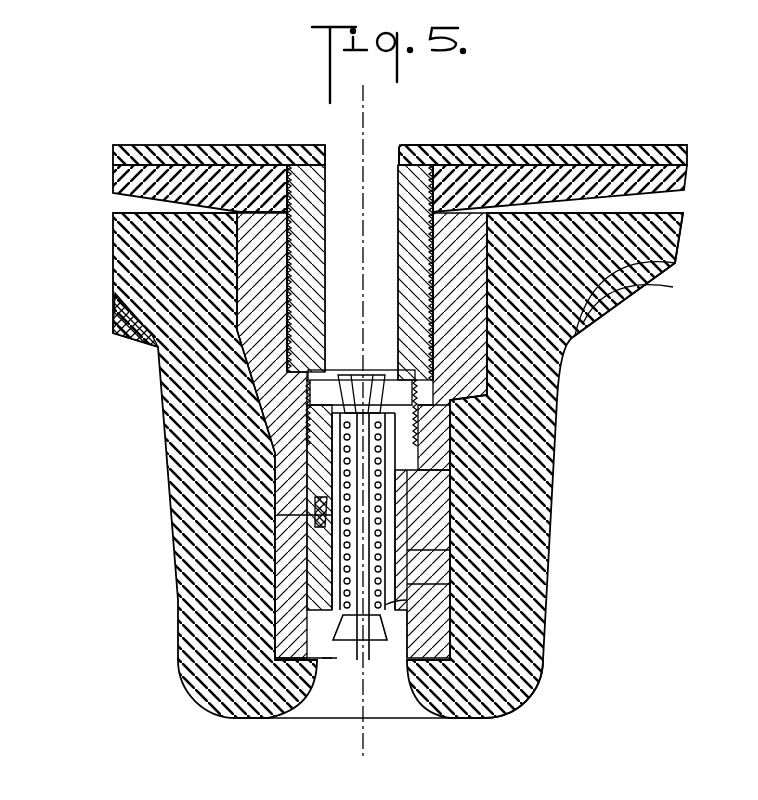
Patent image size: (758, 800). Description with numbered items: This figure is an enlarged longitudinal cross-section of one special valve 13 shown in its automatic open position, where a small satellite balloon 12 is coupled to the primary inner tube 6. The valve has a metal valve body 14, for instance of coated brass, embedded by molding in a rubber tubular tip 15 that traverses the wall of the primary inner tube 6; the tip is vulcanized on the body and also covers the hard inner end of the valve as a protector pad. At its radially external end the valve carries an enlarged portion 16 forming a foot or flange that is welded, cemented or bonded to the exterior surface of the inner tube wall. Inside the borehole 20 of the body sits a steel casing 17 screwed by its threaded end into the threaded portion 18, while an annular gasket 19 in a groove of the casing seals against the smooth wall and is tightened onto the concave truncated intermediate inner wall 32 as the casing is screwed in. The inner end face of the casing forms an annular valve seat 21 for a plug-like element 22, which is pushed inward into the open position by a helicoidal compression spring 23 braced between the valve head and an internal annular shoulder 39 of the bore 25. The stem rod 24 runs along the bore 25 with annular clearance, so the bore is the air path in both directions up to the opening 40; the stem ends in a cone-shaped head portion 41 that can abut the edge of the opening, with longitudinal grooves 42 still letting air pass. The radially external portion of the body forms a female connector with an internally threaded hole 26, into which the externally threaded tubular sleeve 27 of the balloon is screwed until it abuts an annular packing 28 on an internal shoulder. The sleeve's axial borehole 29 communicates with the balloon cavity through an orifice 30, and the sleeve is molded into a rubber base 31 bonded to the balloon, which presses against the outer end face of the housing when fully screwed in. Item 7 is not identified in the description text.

The primary inner tube 6 is at (646, 303).
The nozzle assembly 7 is at (549, 143).
The small satellite balloon 12 is at (189, 145).
The special valve 13 is at (530, 699).
The valve body 14 is at (437, 585).
The tubular tip 15 is at (556, 468).
The enlarged portion 16 is at (676, 233).
The casing 17 is at (412, 550).
The threaded portion 18 is at (445, 442).
The annular gasket 19 is at (315, 515).
The borehole 20 is at (402, 650).
The annular valve seat 21 is at (322, 612).
The plug-like element 22 is at (350, 642).
The helicoidal compression spring 23 is at (340, 650).
The stem rod 24 is at (340, 473).
The bore 25 is at (392, 605).
The internally threaded hole 26 is at (442, 282).
The tubular sleeve 27 is at (305, 164).
The annular packing 28 is at (305, 374).
The axial borehole 29 is at (398, 240).
The orifice 30 is at (393, 145).
The rubber base 31 is at (118, 178).
The concave truncated intermediate inner wall 32 is at (425, 508).
The internal annular shoulder 39 is at (330, 424).
The opening 40 is at (413, 402).
The head portion 41 is at (353, 410).
The longitudinal grooves 42 is at (366, 410).